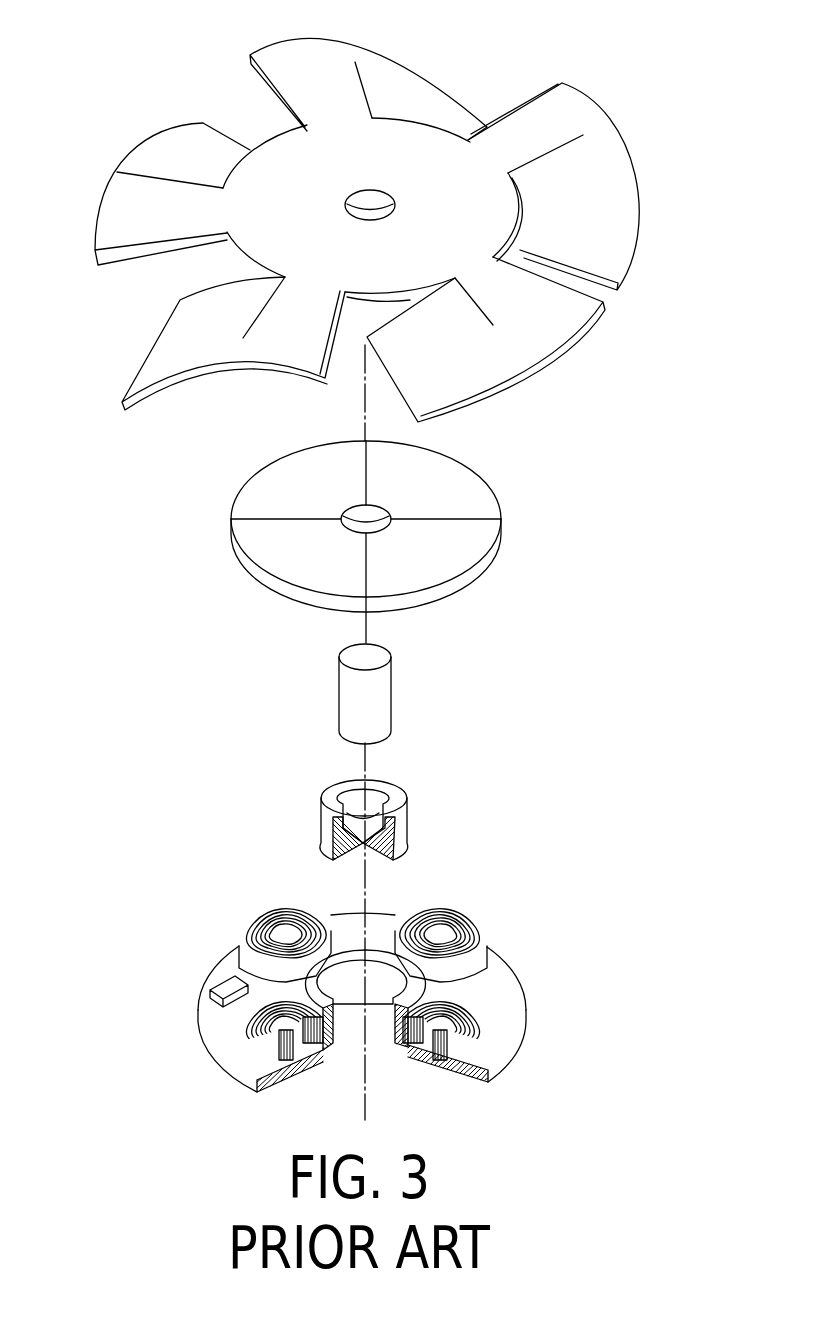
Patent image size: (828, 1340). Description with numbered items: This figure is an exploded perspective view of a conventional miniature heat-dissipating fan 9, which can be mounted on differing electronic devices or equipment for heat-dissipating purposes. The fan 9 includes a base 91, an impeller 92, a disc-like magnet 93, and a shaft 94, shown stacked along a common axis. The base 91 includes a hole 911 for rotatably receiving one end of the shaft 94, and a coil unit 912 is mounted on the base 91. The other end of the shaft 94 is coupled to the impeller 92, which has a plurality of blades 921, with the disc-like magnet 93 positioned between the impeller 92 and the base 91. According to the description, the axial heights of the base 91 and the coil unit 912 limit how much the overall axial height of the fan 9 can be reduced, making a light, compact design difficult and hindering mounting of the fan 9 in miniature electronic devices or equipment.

The heat-dissipating fan 9 is at (82, 158).
The impeller 92 is at (432, 155).
The blades 921 is at (610, 177).
The disc-like magnet 93 is at (473, 492).
The shaft 94 is at (380, 697).
The base 91 is at (502, 1003).
The hole 911 is at (375, 978).
The coil unit 912 is at (467, 928).